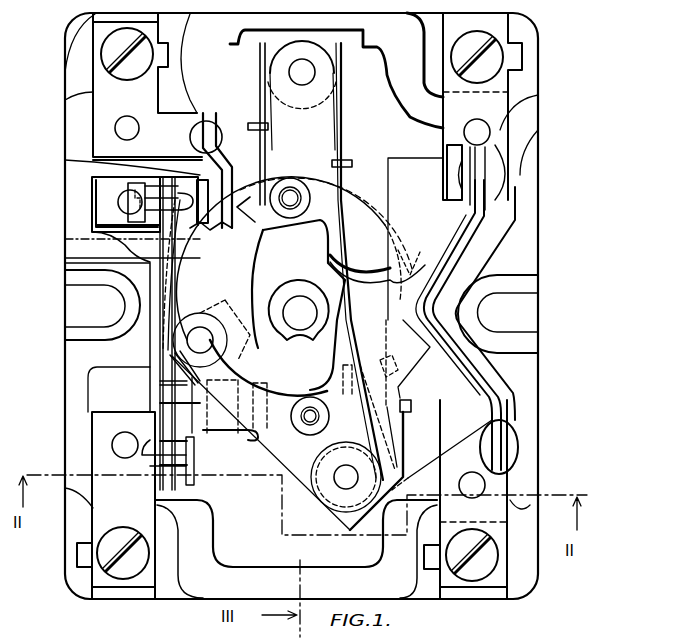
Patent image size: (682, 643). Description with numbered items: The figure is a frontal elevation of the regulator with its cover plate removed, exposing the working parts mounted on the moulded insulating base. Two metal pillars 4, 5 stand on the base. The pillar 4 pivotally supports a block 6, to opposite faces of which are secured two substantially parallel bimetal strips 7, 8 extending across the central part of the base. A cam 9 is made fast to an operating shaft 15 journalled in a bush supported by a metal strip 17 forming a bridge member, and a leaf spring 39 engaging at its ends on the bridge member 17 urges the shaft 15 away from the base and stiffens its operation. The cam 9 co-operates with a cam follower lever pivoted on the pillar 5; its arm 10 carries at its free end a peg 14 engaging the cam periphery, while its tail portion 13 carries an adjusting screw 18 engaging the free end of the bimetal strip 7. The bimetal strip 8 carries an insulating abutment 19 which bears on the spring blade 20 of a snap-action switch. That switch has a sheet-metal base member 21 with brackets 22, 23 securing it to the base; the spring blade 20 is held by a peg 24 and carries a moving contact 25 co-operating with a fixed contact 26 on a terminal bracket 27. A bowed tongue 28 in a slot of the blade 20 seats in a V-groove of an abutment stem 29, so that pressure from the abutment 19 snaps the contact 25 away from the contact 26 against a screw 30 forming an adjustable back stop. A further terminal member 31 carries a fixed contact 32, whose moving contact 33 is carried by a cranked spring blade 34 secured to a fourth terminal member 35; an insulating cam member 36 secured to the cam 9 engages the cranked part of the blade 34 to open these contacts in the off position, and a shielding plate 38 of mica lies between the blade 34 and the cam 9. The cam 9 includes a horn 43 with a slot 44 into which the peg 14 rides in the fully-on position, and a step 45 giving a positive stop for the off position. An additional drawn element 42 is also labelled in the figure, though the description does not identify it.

The metal pillar 4 is at (303, 78).
The metal pillar 5 is at (345, 480).
The block 6 is at (340, 37).
The bimetal strip 7 is at (348, 54).
The bimetal strip 8 is at (260, 63).
The cam 9 is at (232, 286).
The cam follower lever arm 10 is at (232, 405).
The tail portion 13 is at (407, 440).
The peg 14 is at (206, 338).
The operating shaft 15 is at (309, 316).
The metal strip (bridge member) 17 is at (306, 165).
The adjusting screw 18 is at (412, 405).
The abutment 19 is at (203, 402).
The spring blade 20 is at (65, 258).
The switch base member 21 is at (163, 335).
The bracket 22 is at (100, 198).
The bracket 23 is at (100, 430).
The peg 24 is at (148, 456).
The moving contact 25 is at (70, 160).
The fixed contact 26 is at (232, 165).
The terminal bracket 27 is at (100, 70).
The bowed tongue 28 is at (120, 239).
The abutment stem 29 is at (168, 385).
The screw (adjustable back stop) 30 is at (130, 190).
The terminal member 31 is at (505, 97).
The fixed contact 32 is at (470, 130).
The moving contact 33 is at (485, 165).
The spring blade 34 is at (470, 223).
The terminal member 35 is at (495, 485).
The cam member 36 is at (392, 364).
The shielding plate 38 is at (417, 158).
The leaf spring 39 is at (302, 246).
The pivot pin 42 is at (305, 432).
The horn 43 is at (417, 262).
The slot 44 is at (372, 280).
The step 45 is at (238, 208).